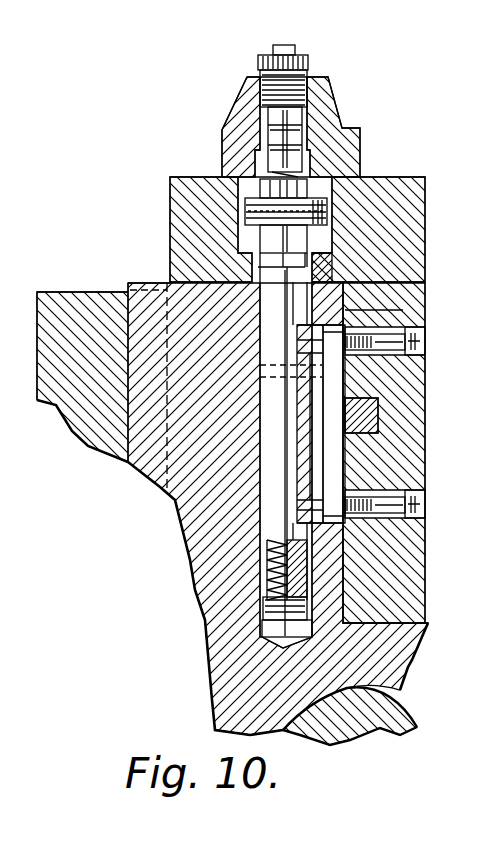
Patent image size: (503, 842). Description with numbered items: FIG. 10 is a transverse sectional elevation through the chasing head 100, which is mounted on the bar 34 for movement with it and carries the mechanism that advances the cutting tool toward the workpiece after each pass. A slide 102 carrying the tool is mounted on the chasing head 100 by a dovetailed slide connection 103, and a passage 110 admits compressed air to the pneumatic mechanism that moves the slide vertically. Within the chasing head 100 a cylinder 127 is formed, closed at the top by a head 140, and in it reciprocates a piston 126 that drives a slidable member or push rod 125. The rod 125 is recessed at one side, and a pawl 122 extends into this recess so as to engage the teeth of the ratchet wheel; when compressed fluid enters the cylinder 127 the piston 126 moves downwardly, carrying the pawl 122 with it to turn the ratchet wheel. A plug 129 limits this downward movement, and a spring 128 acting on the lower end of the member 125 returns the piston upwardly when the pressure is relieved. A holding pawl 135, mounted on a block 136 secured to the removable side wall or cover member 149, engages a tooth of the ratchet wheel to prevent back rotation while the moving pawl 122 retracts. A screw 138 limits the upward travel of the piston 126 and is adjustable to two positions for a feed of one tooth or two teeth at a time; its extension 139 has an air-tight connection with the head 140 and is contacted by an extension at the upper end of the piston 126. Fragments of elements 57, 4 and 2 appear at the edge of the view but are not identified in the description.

The chasing head 100 is at (171, 140).
The slide 102 is at (105, 437).
The dovetailed slide connection 103 is at (128, 283).
The passage 110 is at (370, 413).
The pawl 122 is at (300, 385).
The push rod 125 is at (272, 508).
The piston 126 is at (313, 220).
The cylinder 127 is at (250, 237).
The spring 128 is at (272, 627).
The plug 129 is at (263, 638).
The holding pawl 135 is at (315, 447).
The block 136 is at (345, 482).
The screw 138 is at (287, 44).
The extension 139 is at (336, 127).
The head 140 is at (357, 156).
The cover member 149 is at (405, 577).
The bar 34 is at (390, 739).
The member 57 is at (8, 258).
The frame 4 is at (2, 423).
The base 2 is at (2, 696).